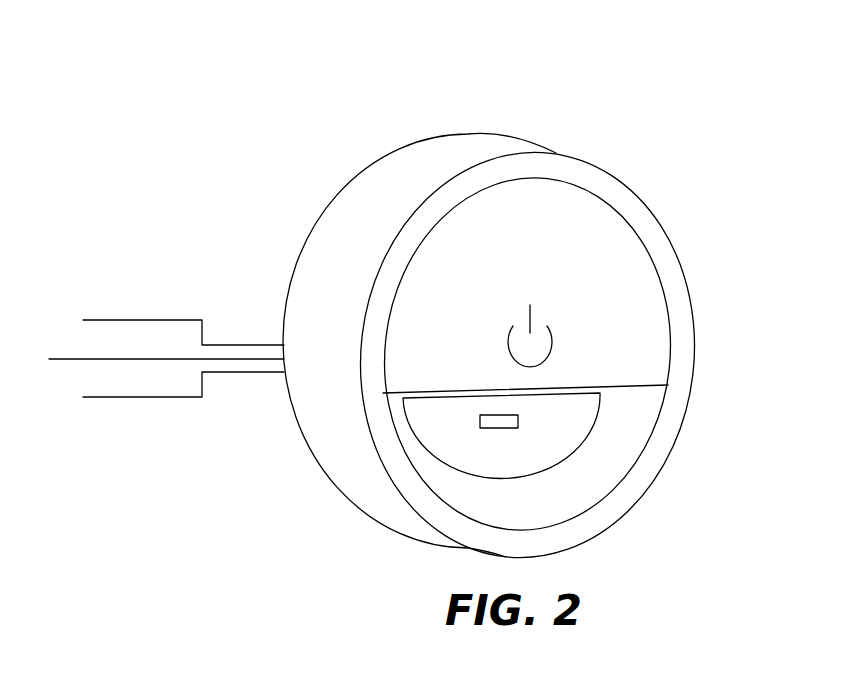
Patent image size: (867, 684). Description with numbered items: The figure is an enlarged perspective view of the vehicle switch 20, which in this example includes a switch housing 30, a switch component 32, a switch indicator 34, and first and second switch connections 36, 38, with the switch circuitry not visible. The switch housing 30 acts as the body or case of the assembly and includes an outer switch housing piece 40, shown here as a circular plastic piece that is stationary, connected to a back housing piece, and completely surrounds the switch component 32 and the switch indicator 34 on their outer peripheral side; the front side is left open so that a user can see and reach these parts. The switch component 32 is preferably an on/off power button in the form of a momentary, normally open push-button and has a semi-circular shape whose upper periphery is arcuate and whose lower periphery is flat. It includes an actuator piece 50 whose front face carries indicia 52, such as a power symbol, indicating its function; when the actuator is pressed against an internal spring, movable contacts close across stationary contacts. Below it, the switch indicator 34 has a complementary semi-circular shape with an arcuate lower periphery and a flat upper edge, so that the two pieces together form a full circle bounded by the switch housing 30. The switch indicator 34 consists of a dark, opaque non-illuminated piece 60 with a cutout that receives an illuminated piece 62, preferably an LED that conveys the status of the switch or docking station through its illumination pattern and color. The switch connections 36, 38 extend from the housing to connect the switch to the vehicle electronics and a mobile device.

The vehicle switch 20 is at (586, 104).
The switch housing 30 is at (558, 354).
The switch component 32 is at (571, 354).
The actuator piece 50 is at (615, 277).
The switch indicator 34 is at (530, 440).
The first switch connection 36 is at (105, 320).
The second switch connection 38 is at (99, 359).
The outer switch housing piece 40 is at (347, 235).
The indicia 52 is at (553, 330).
The non-illuminated piece 60 is at (428, 412).
The illuminated piece 62 is at (482, 428).